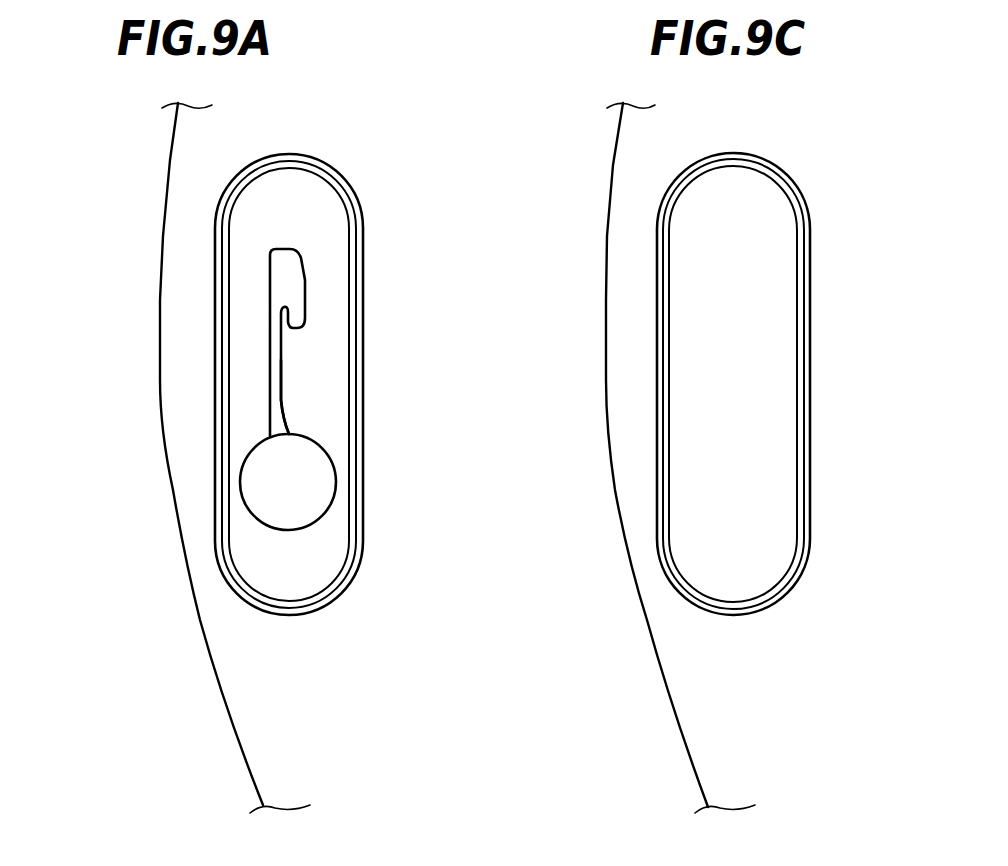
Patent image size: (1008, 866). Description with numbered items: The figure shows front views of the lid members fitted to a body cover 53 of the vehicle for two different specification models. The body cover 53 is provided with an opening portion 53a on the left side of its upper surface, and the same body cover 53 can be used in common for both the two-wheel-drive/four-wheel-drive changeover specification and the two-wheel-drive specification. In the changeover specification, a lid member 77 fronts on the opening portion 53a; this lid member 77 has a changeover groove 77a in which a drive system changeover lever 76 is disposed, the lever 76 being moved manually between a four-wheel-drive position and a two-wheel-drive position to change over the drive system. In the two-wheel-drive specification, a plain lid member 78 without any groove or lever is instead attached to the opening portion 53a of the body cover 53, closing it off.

In FIG. 9A, the body cover 53 is at (193, 163).
In FIG. 9C, the body cover 53 is at (638, 163).
In FIG. 9A, the opening portion 53a is at (215, 228).
In FIG. 9C, the opening portion 53a is at (658, 228).
In FIG. 9A, the lid member 77 is at (247, 382).
In FIG. 9A, the changeover groove 77a is at (275, 399).
In FIG. 9A, the drive system changeover lever 76 is at (267, 483).
In FIG. 9C, the lid member 78 is at (690, 382).